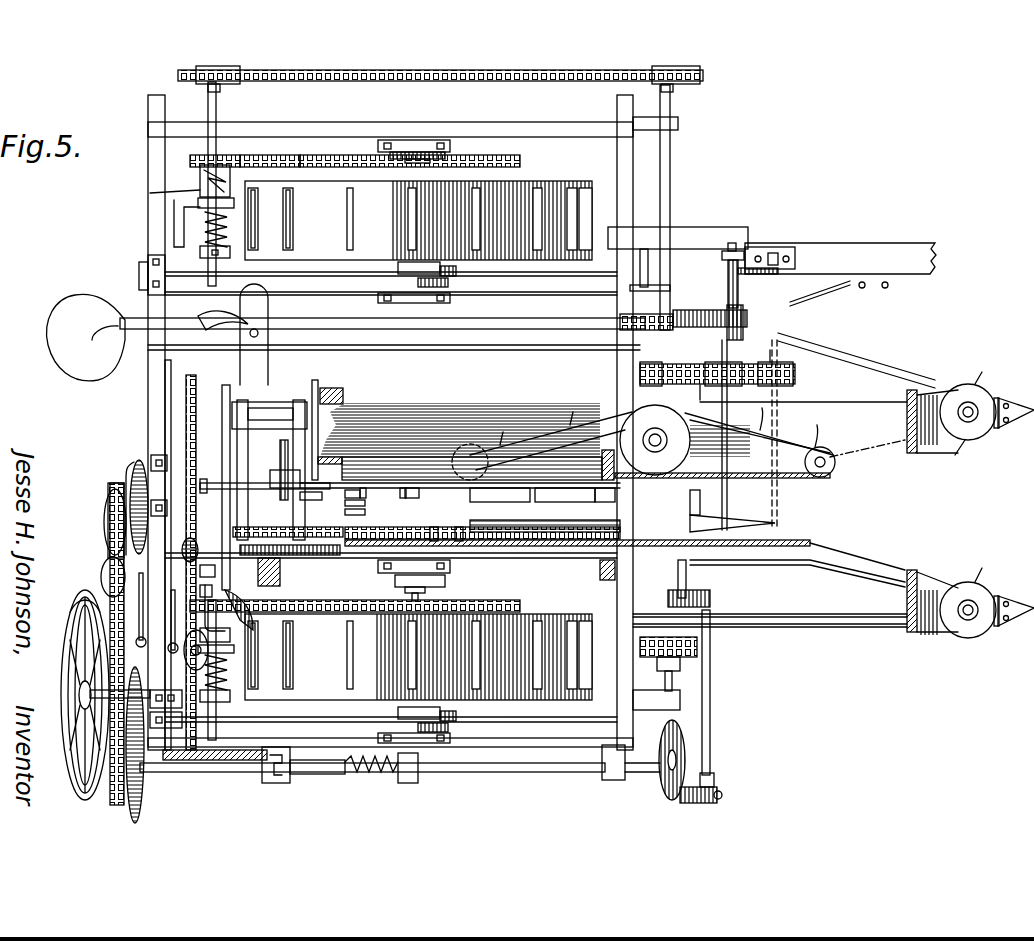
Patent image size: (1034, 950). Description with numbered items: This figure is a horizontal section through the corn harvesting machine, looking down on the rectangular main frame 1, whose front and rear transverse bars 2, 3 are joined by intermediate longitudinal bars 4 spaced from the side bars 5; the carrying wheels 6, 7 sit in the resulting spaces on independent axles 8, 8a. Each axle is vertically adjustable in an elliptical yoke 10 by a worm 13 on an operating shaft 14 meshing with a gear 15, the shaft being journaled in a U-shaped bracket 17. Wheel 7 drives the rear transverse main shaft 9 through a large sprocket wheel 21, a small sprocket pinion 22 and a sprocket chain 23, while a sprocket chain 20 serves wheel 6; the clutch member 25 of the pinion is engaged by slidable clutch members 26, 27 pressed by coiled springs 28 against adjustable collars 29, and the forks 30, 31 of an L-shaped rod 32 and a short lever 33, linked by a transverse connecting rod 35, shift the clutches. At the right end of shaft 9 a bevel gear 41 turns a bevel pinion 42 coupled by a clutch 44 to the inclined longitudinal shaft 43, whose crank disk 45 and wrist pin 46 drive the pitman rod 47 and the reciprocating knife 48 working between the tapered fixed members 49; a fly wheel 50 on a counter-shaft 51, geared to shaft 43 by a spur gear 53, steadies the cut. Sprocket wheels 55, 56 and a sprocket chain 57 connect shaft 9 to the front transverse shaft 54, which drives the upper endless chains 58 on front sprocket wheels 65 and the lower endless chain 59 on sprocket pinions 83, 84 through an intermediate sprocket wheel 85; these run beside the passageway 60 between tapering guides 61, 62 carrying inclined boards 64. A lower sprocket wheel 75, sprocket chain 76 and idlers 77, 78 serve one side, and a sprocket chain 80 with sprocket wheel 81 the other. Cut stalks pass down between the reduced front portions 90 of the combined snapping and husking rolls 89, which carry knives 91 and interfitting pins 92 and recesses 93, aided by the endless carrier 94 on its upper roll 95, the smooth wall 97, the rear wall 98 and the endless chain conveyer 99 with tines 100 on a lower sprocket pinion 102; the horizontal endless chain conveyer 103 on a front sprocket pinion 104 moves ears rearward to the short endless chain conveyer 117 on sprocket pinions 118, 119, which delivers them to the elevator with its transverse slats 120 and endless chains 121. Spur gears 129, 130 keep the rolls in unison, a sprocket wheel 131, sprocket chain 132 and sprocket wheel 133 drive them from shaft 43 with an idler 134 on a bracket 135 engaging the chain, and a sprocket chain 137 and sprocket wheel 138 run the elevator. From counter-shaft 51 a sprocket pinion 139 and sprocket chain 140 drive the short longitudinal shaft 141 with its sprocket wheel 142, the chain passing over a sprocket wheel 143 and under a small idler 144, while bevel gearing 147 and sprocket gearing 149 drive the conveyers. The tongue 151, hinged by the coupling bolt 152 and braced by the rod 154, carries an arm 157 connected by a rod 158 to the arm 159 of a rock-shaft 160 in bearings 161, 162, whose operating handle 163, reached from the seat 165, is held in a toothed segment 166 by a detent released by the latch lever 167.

The main or supporting frame 1 is at (148, 152).
The front transverse bar 2 is at (631, 193).
The rear transverse bar 3 is at (168, 385).
The longitudinal bars 4 is at (578, 291).
The side bars 5 is at (568, 122).
The carrying wheel 6 is at (540, 692).
The carrying wheel 7 is at (560, 182).
The shaft or axle 8 is at (426, 593).
The shaft or axle 8a is at (446, 155).
The rear transverse main shaft 9 is at (216, 115).
The vertical yokes 10 is at (408, 140).
The worm 13 is at (400, 262).
The operating shaft 14 is at (318, 272).
The gear 15 is at (448, 282).
The U-shaped bracket 17 is at (456, 270).
The sprocket chain 20 is at (314, 602).
The large sprocket wheel 21 is at (512, 158).
The small sprocket pinion 22 is at (232, 157).
The sprocket chain 23 is at (286, 160).
The clutch member 25 is at (200, 176).
The slidable clutch member 26 is at (230, 635).
The slidable clutch member 27 is at (150, 193).
The coiled springs 28 is at (206, 232).
The adjustable collars 29 is at (200, 255).
The fork 30 is at (234, 203).
The fork 31 is at (234, 650).
The rod 32 is at (174, 230).
The short lever 33 is at (171, 612).
The connecting rod 35 is at (141, 608).
The bevel gear 41 is at (180, 760).
The bevel pinion 42 is at (272, 783).
The longitudinal shaft 43 is at (214, 772).
The clutch 44 is at (303, 775).
The crank disk 45 is at (668, 800).
The wrist pin 46 is at (722, 795).
The pitman rod 47 is at (710, 712).
The reciprocatable knife 48 is at (686, 575).
The fixed members 49 is at (765, 500).
The balance or fly wheel 50 is at (70, 790).
The short counter-shaft 51 is at (66, 700).
The spur gear 53 is at (138, 815).
The front transverse shaft 54 is at (670, 153).
The front sprocket wheel 55 is at (660, 68).
The rear sprocket wheel 56 is at (236, 72).
The sprocket chain 57 is at (450, 71).
The upper endless chains 58 is at (954, 440).
The lower endless chain 59 is at (548, 424).
The longitudinal passageway 60 is at (812, 460).
The tapering guide 61 is at (1014, 400).
The tapering guide 62 is at (1014, 598).
The inclined board 64 is at (907, 440).
The front sprocket wheel 65 is at (980, 426).
The lower sprocket wheel 75 is at (662, 368).
The sprocket chain 76 is at (792, 376).
The idler 77 is at (775, 364).
The idler 78 is at (712, 368).
The sprocket chain 80 is at (698, 650).
The sprocket wheel 81 is at (678, 674).
The front sprocket pinion 83 is at (826, 450).
The rear sprocket pinion 84 is at (472, 448).
The intermediate sprocket wheel 85 is at (722, 441).
The combined snapping and husking rolls 89 is at (460, 505).
The reduced front portions 90 is at (535, 566).
The knives 91 is at (598, 520).
The projections or pins 92 is at (510, 499).
The notches or recesses 93 is at (460, 542).
The endless carrier 94 is at (398, 446).
The upper roll 95 is at (420, 462).
The smooth continuous wall 97 is at (604, 580).
The rear wall 98 is at (362, 494).
The endless chain conveyer 99 is at (365, 503).
The fingers or tines 100 is at (365, 512).
The lower sprocket pinion 102 is at (340, 538).
The horizontal endless chain conveyer 103 is at (256, 530).
The front sprocket pinion 104 is at (582, 542).
The short endless chain conveyer 117 is at (282, 482).
The upper sprocket pinion 118 is at (280, 460).
The lower sprocket pinion 119 is at (300, 497).
The transverse slats 120 is at (283, 402).
The endless chains 121 is at (270, 413).
The spur gear 129 is at (104, 535).
The spur gear 130 is at (136, 466).
The sprocket wheel 131 is at (107, 495).
The sprocket chain 132 is at (95, 605).
The sprocket wheel 133 is at (114, 800).
The idler 134 is at (103, 568).
The bracket or bar 135 is at (122, 478).
The sprocket chain 137 is at (194, 390).
The sprocket wheel 138 is at (183, 529).
The sprocket pinion 139 is at (182, 720).
The sprocket chain 140 is at (189, 650).
The short longitudinal shaft 141 is at (172, 492).
The sprocket wheel 142 is at (172, 456).
The sprocket wheel 143 is at (221, 605).
The small idler 144 is at (216, 568).
The bevel gearing 147 is at (255, 603).
The sprocket gearing 149 is at (280, 570).
The draft-beam or tongue 151 is at (888, 243).
The rod or bolt 152 is at (640, 262).
The rod or brace 154 is at (839, 296).
The upwardly extending arm 157 is at (778, 253).
The rod 158 is at (762, 274).
The arm 159 is at (742, 248).
The rock-shaft 160 is at (728, 275).
The bearing or support 161 is at (704, 237).
The bearing or support 162 is at (743, 330).
The operating handle 163 is at (410, 350).
The seat 165 is at (86, 337).
The toothed segment 166 is at (700, 310).
The latch lever 167 is at (233, 334).